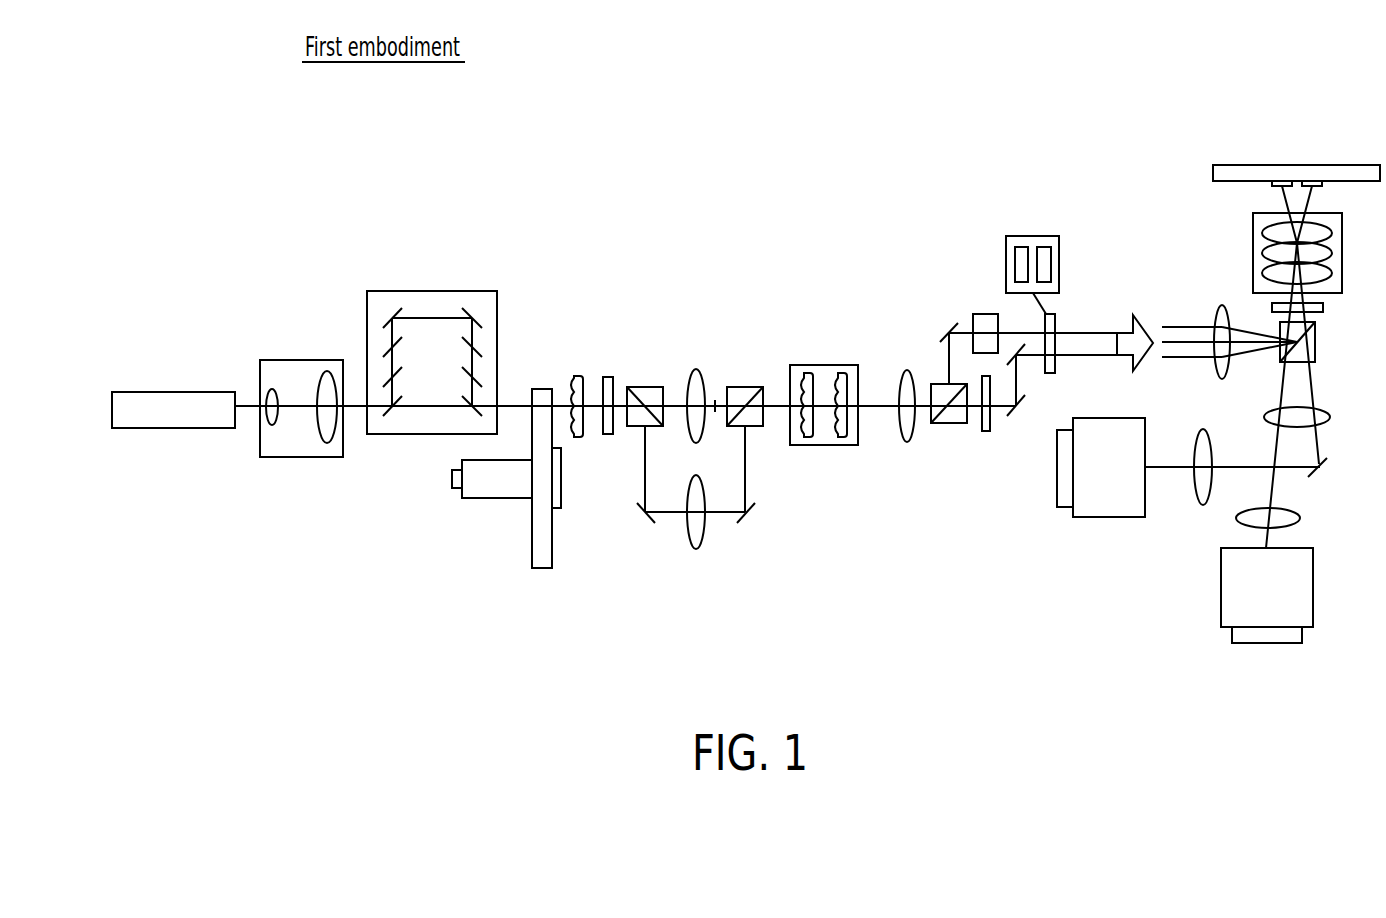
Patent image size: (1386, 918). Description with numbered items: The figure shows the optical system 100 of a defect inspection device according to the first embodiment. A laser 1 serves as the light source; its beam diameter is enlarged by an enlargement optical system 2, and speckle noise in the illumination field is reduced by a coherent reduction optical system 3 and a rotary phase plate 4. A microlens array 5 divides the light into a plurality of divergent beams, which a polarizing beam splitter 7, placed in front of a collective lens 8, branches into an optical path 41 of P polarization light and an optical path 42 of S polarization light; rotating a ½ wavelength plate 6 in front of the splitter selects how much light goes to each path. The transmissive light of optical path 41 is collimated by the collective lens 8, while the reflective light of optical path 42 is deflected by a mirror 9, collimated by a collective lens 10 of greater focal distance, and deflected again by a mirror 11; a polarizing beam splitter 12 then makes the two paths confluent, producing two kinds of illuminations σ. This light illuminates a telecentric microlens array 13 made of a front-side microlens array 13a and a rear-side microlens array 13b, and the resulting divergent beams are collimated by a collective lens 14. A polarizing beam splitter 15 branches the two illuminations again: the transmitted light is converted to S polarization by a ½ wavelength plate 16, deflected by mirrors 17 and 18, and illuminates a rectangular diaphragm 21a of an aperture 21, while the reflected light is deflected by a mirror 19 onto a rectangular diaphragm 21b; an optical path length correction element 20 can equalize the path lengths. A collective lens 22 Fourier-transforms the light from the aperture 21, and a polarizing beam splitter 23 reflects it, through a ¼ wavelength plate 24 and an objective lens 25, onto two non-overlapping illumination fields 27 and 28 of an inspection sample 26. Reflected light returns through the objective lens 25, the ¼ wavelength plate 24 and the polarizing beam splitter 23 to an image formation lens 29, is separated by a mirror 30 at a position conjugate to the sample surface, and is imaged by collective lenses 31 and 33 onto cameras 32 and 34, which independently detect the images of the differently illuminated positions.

The optical system 100 is at (832, 226).
The laser 1 is at (214, 392).
The enlargement optical system 2 is at (303, 360).
The coherent reduction optical system 3 is at (440, 291).
The rotary phase plate 4 is at (489, 500).
The microlens array 5 is at (575, 375).
The ½ wavelength plate 6 is at (606, 377).
The polarizing beam splitter 7 is at (645, 387).
The collective lens 8 is at (696, 369).
The mirror 9 is at (645, 523).
The collective lens 10 is at (696, 549).
The mirror 11 is at (747, 523).
The polarizing beam splitter 12 is at (748, 387).
The microlens array 13 is at (822, 365).
The front-side microlens array 13a is at (806, 446).
The rear-side microlens array 13b is at (843, 446).
The collective lens 14 is at (907, 370).
The polarizing beam splitter 15 is at (948, 425).
The ½ wavelength plate 16 is at (986, 432).
The mirror 17 is at (1020, 417).
The mirror 18 is at (1020, 368).
The mirror 19 is at (940, 325).
The optical path length correction element 20 is at (980, 314).
The aperture 21 is at (1032, 236).
The rectangular diaphragm 21a is at (1020, 247).
The rectangular diaphragm 21b is at (1046, 247).
The collective lens 22 is at (1216, 312).
The polarizing beam splitter 23 is at (1316, 347).
The ¼ wavelength plate 24 is at (1324, 308).
The objective lens 25 is at (1253, 254).
The inspection sample 26 is at (1320, 165).
The illumination field 27 is at (1280, 184).
The illumination field 28 is at (1315, 184).
The image formation lens 29 is at (1331, 417).
The mirror 30 is at (1323, 472).
The collective lens 31 is at (1200, 508).
The camera 32 is at (1109, 517).
The collective lens 33 is at (1301, 518).
The camera 34 is at (1314, 590).
The optical path 41 is at (715, 402).
The optical path 42 is at (645, 472).